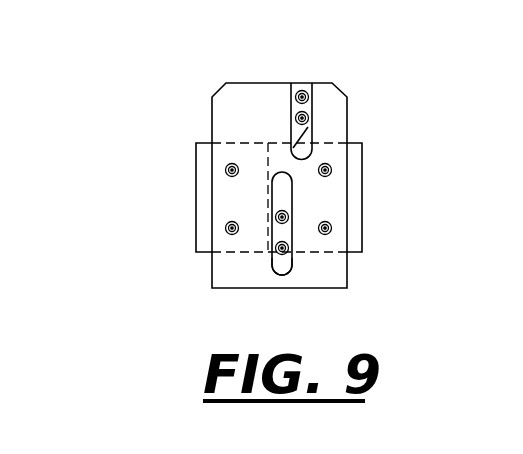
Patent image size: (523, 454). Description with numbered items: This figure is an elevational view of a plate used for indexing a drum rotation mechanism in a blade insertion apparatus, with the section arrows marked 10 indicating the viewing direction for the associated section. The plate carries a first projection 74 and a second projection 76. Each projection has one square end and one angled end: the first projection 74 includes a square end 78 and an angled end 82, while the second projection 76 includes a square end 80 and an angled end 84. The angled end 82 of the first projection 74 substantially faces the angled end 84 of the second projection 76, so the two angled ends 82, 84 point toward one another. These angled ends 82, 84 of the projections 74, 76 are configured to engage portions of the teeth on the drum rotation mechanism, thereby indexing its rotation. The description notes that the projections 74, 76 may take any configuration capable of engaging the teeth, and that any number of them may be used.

The clamping tool assembly 10 is at (280, 114).
The first projection 74 is at (290, 105).
The second projection 76 is at (278, 229).
The square end 78 is at (303, 82).
The square end 80 is at (286, 261).
The angled end 82 is at (304, 136).
The angled end 84 is at (272, 178).